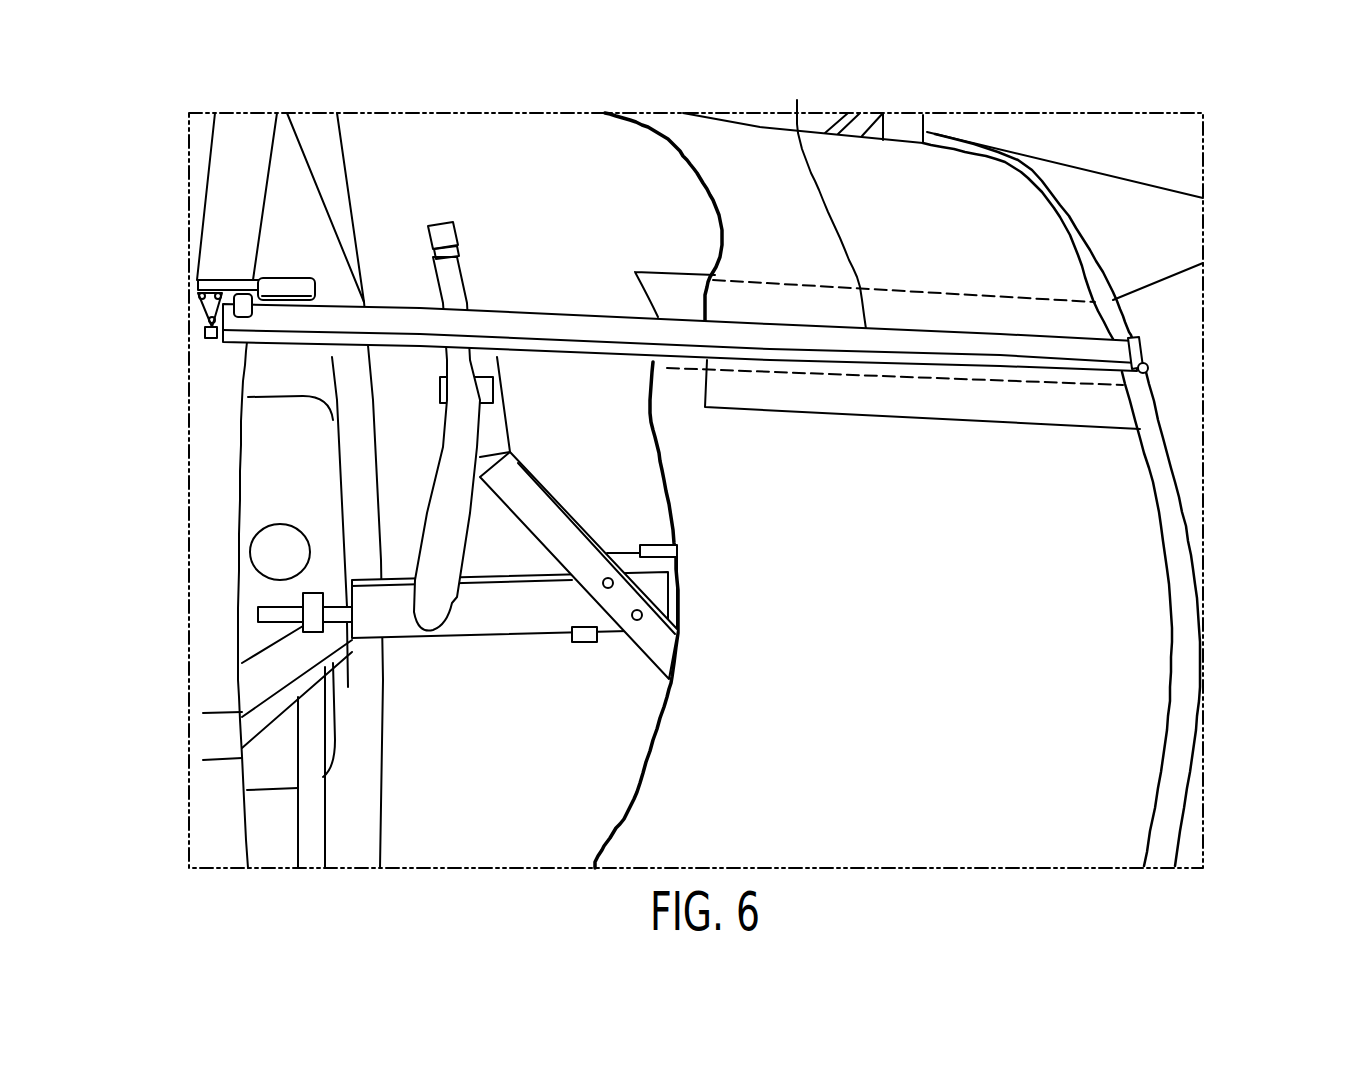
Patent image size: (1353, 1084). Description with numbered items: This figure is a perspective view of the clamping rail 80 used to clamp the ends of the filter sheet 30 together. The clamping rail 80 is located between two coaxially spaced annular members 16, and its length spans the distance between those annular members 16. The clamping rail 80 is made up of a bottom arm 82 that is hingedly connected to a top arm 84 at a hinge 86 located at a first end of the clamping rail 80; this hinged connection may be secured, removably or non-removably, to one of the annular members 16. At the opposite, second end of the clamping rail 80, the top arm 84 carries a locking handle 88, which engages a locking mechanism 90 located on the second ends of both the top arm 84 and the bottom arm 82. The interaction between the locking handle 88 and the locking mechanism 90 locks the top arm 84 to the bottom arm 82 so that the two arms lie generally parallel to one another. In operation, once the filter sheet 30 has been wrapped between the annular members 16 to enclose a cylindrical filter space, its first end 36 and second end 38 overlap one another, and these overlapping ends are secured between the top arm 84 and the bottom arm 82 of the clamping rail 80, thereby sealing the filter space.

The annular member 16 is at (694, 488).
The filter sheet 30 is at (774, 490).
The first end 36 is at (675, 254).
The second end 38 is at (903, 385).
The clamping rail 80 is at (680, 219).
The bottom arm 82 is at (680, 382).
The top arm 84 is at (827, 203).
The hinge 86 is at (1223, 328).
The locking handle 88 is at (203, 250).
The locking mechanism 90 is at (153, 315).